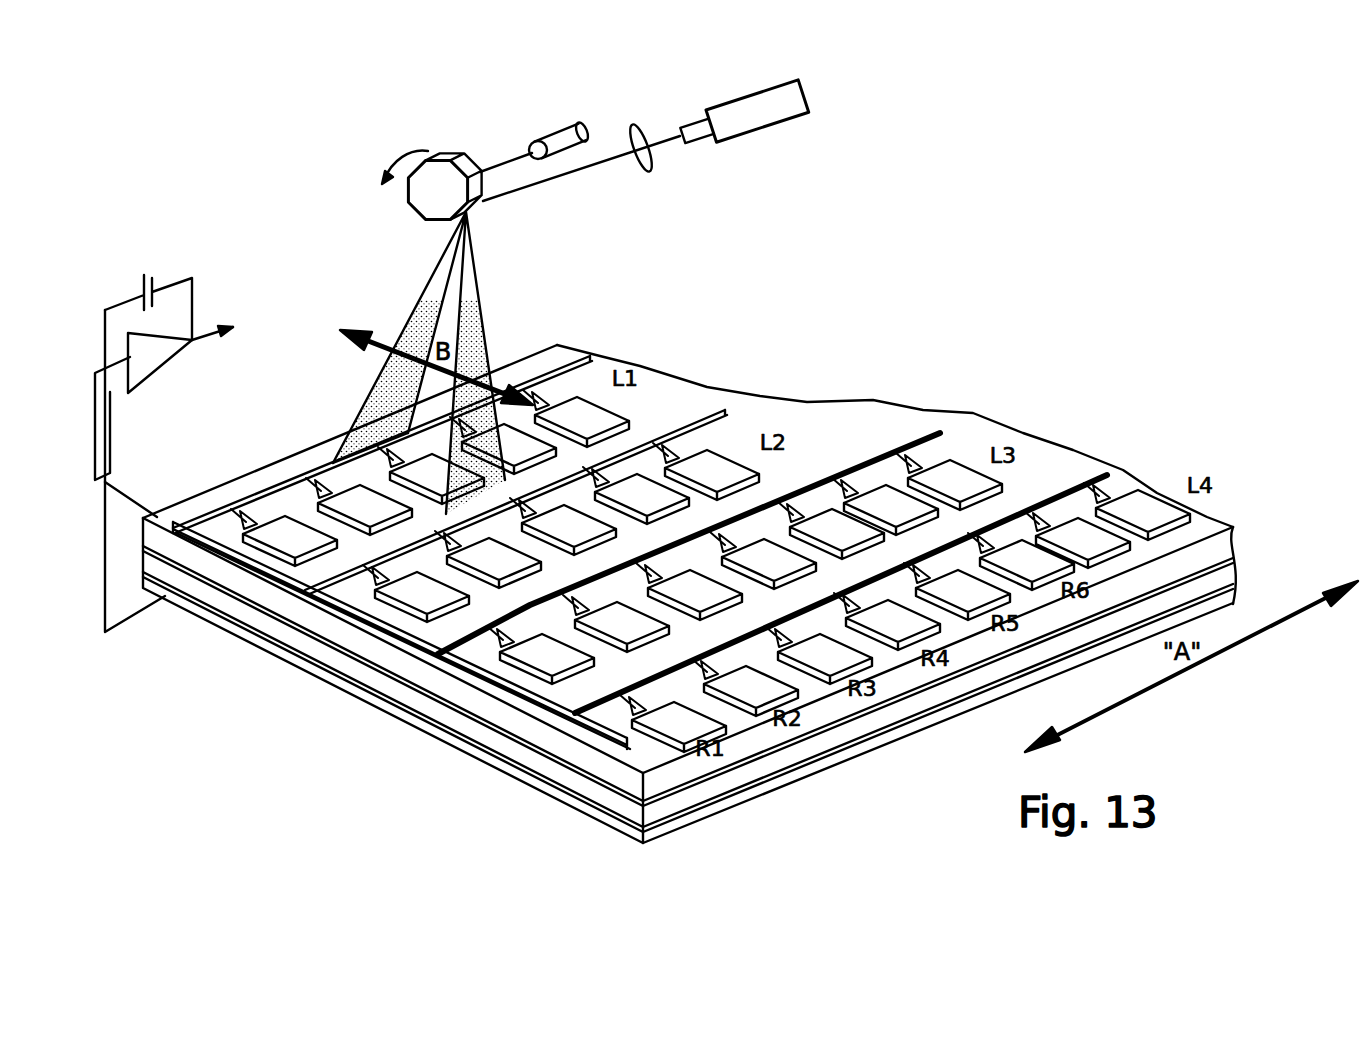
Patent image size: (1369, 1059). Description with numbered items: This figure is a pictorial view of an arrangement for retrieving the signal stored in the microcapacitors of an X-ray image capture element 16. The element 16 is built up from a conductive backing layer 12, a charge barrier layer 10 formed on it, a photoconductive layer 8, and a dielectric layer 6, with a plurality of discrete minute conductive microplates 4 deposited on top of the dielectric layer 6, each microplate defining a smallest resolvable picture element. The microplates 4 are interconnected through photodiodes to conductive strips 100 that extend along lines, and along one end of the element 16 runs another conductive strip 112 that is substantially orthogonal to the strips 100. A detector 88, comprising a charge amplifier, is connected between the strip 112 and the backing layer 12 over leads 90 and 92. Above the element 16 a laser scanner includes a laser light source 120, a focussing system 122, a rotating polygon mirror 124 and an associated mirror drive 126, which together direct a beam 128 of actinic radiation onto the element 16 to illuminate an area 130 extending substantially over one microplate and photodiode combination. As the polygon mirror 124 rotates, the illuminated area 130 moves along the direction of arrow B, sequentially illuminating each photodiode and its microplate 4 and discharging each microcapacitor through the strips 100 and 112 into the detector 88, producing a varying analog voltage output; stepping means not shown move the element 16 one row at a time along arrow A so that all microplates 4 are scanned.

The microplates 4 is at (590, 415).
The dielectric layer 6 is at (437, 690).
The photoconductive layer 8 is at (327, 657).
The charge barrier layer 10 is at (353, 688).
The conductive backing layer 12 is at (247, 642).
The X-ray image capture element 16 is at (1047, 423).
The detector 88 is at (180, 359).
The lead 90 is at (95, 457).
The lead 92 is at (103, 588).
The strips 100 is at (820, 477).
The conductive strip 112 is at (507, 687).
The laser light source 120 is at (758, 136).
The focussing system 122 is at (659, 164).
The rotating polygon mirror 124 is at (407, 203).
The mirror drive 126 is at (540, 131).
The beam 128 is at (483, 323).
The illuminated area 130 is at (378, 470).